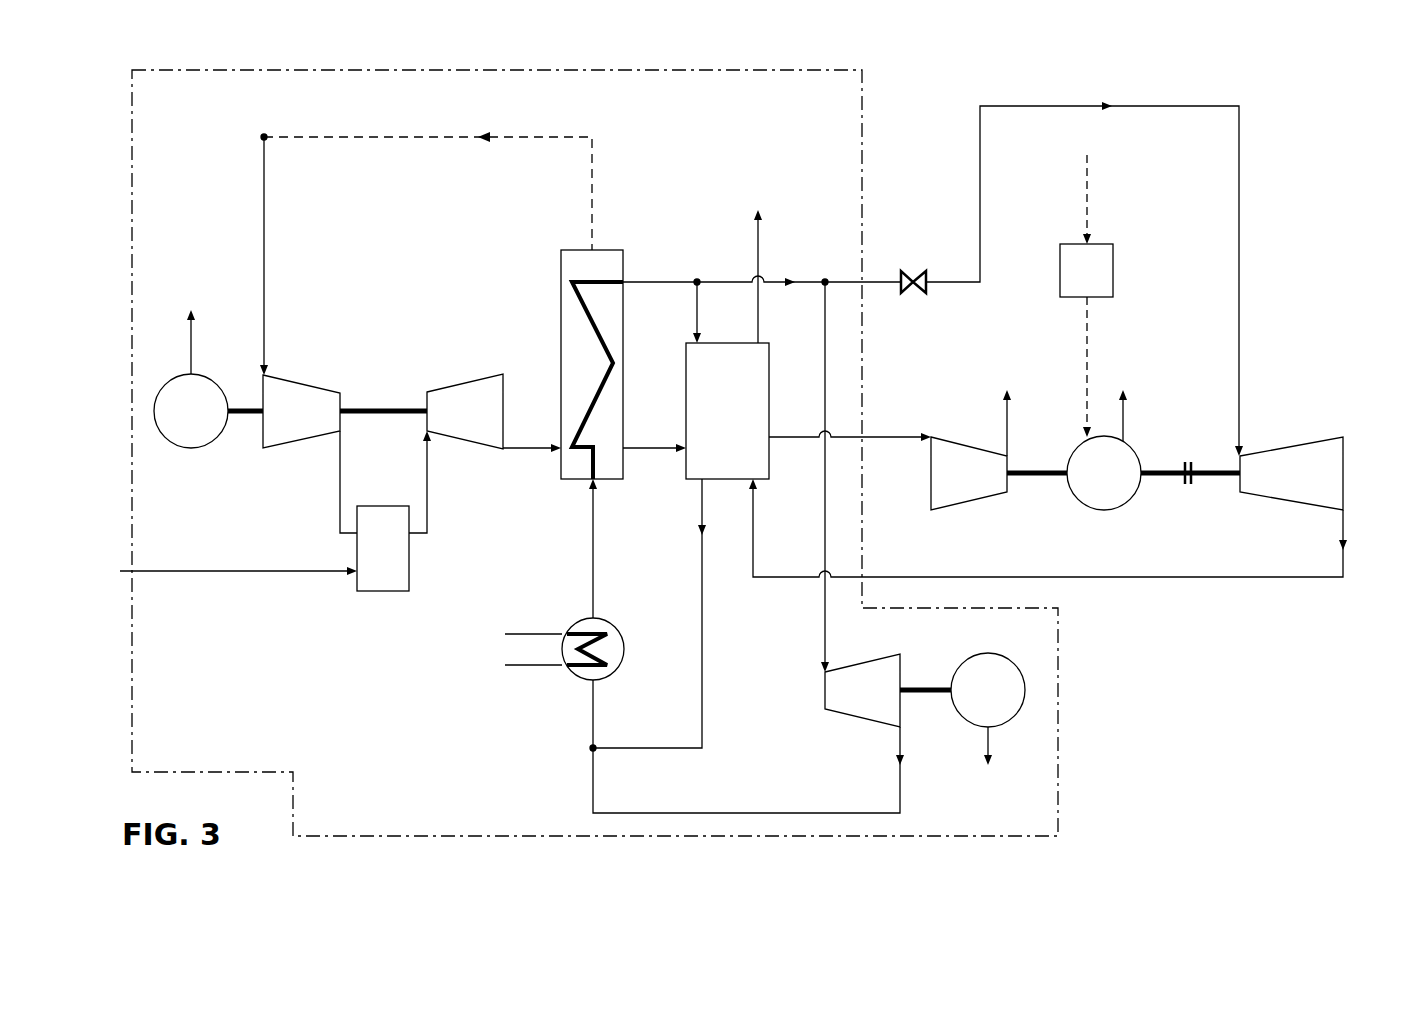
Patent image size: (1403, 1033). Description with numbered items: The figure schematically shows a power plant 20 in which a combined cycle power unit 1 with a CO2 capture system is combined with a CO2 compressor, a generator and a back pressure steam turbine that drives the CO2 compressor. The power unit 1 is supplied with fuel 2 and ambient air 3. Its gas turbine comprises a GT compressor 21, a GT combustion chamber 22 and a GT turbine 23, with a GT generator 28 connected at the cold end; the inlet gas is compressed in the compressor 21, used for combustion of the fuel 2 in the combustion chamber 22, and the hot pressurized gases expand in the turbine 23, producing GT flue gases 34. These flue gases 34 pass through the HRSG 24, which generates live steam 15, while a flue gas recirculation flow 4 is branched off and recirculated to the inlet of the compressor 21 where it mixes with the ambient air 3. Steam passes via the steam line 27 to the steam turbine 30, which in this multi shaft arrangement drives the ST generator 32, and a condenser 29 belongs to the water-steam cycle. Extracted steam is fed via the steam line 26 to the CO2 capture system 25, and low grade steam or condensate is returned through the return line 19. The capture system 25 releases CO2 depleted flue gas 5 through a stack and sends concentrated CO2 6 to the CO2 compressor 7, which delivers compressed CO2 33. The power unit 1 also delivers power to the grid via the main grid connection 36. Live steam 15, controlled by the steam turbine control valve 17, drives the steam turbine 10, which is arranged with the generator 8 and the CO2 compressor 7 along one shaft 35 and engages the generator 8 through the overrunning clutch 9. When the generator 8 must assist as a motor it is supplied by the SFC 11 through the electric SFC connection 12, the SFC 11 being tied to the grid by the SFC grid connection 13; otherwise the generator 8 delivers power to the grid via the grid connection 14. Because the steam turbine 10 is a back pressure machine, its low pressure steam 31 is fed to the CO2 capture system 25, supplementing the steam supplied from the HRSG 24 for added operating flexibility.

The power generating unit 1 is at (595, 453).
The fuel supply 2 is at (227, 568).
The ambient air 3 is at (262, 236).
The flue gas recirculation flow 4 is at (402, 134).
The CO2 depleted flue gas 5 is at (758, 261).
The concentrated CO2 6 is at (887, 433).
The CO2 compressor 7 is at (999, 473).
The generator 8 is at (1104, 473).
The overrunning clutch 9 is at (1187, 456).
The steam turbine 10 is at (1291, 473).
The SFC 11 is at (1086, 270).
The electric SFC connection 12 is at (1083, 405).
The SFC grid connection 13 is at (1083, 194).
The grid connection 14 is at (1122, 400).
The live steam 15 is at (1243, 290).
The steam turbine control valve 17 is at (913, 274).
The return line 19 is at (812, 810).
The power plant 20 is at (1288, 142).
The GT compressor 21 is at (345, 411).
The GT combustion chamber 22 is at (385, 511).
The GT turbine 23 is at (465, 411).
The HRSG 24 is at (575, 333).
The CO2 capture system 25 is at (696, 411).
The steam line to CO2 capture system 26 is at (693, 306).
The steam line to steam turbine 27 is at (697, 592).
The GT generator 28 is at (208, 411).
The condenser 29 is at (585, 672).
The steam turbine 30 is at (886, 504).
The low pressure steam 31 is at (1226, 579).
The ST generator 32 is at (988, 690).
The compressed CO2 33 is at (1003, 416).
The GT flue gases 34 is at (527, 450).
The shaft 35 is at (1166, 478).
The main grid connection 36 is at (589, 543).